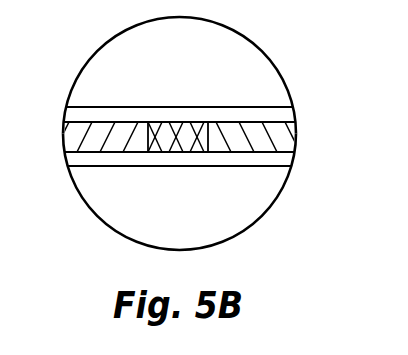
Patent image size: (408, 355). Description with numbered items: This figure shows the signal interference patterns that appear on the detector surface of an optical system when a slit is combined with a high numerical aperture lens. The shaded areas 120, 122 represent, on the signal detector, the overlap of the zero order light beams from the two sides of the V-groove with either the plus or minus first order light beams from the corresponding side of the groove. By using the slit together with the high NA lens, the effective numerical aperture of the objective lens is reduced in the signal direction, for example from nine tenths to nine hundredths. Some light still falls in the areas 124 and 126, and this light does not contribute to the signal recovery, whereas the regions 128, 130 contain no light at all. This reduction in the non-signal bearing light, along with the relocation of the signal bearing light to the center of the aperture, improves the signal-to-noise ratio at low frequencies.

The shaded area 120 is at (283, 140).
The shaded area 122 is at (68, 137).
The non-signal light area 124 is at (292, 85).
The non-signal light area 126 is at (267, 163).
The no-light region 128 is at (243, 223).
The no-light region 130 is at (247, 50).